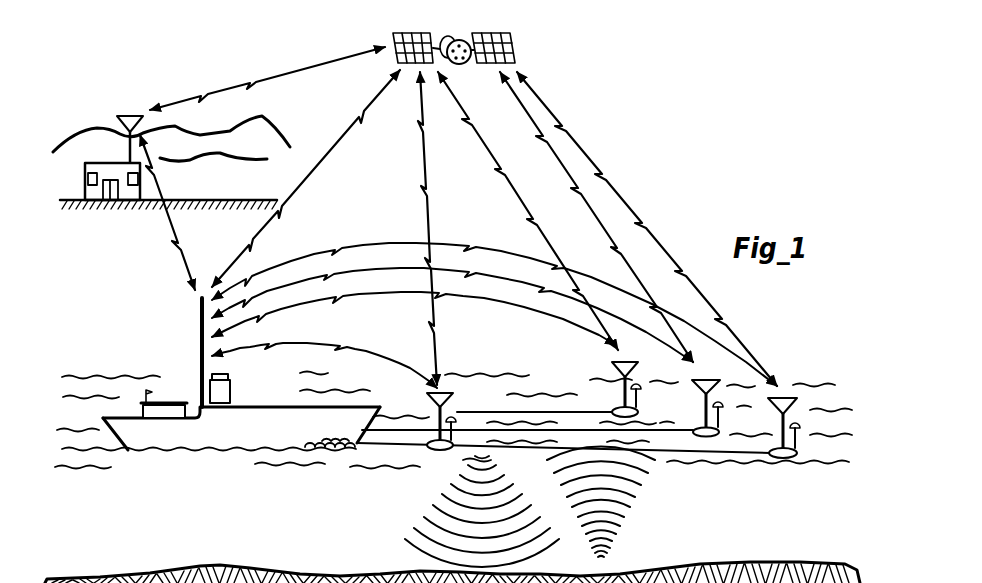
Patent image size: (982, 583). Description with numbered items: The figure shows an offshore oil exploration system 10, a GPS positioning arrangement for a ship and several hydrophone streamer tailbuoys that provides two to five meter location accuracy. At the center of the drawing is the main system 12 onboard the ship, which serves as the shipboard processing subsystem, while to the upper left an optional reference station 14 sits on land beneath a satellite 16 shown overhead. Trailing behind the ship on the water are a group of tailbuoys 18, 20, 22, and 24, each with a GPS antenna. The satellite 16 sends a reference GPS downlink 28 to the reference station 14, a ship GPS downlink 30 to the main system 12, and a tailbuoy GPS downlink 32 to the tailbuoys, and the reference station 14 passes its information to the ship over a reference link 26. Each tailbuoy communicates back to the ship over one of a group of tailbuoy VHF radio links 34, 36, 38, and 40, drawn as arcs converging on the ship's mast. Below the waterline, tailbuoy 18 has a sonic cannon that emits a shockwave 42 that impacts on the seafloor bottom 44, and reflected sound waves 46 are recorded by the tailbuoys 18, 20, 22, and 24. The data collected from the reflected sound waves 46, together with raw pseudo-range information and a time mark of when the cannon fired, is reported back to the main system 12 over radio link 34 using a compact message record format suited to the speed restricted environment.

The offshore oil exploration system 10 is at (688, 186).
The main system 12 is at (254, 390).
The reference station 14 is at (86, 173).
The satellite 16 is at (452, 35).
The tailbuoy 18 is at (453, 392).
The tailbuoy 20 is at (612, 366).
The tailbuoy 22 is at (695, 386).
The tailbuoy 24 is at (797, 400).
The reference link 26 is at (172, 227).
The reference GPS downlink 28 is at (315, 66).
The ship GPS downlink 30 is at (365, 116).
The tailbuoy GPS downlink 32 is at (554, 117).
The tailbuoy VHF radio link 34 is at (322, 326).
The tailbuoy VHF radio link 36 is at (470, 280).
The tailbuoy VHF radio link 38 is at (470, 254).
The tailbuoy VHF radio link 40 is at (455, 230).
The shockwave 42 is at (445, 516).
The seafloor bottom 44 is at (332, 575).
The reflected sound waves 46 is at (626, 510).